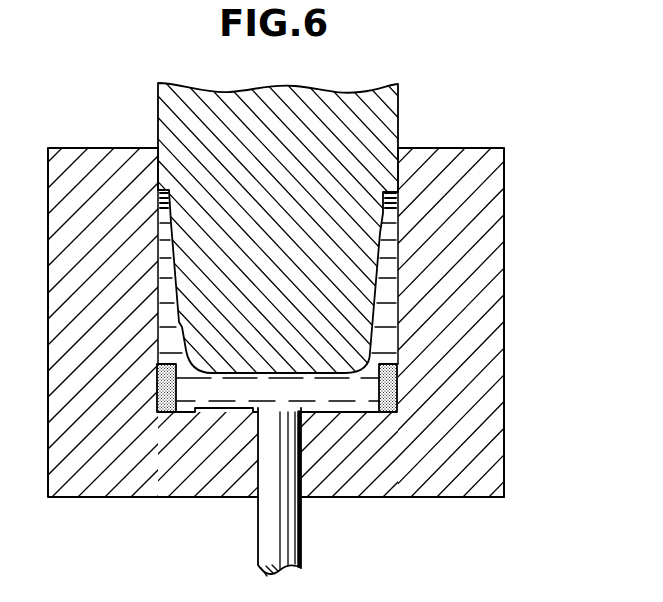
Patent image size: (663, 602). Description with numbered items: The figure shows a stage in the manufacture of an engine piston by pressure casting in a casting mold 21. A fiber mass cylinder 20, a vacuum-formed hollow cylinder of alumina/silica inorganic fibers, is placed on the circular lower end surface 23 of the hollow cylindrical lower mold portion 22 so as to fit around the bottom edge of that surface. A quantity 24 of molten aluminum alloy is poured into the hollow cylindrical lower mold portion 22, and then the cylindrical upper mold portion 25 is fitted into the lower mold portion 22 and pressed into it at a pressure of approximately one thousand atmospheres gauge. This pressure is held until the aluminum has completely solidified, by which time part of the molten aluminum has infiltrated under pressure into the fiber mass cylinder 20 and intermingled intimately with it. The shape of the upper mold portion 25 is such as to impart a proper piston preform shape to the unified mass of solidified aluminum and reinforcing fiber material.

The fiber mass cylinder 20 is at (157, 385).
The casting mold 21 is at (137, 140).
The hollow cylindrical lower mold portion 22 is at (505, 338).
The circular lower end surface 23 is at (338, 409).
The quantity of molten aluminum alloy 24 is at (276, 383).
The cylindrical upper mold portion 25 is at (399, 108).